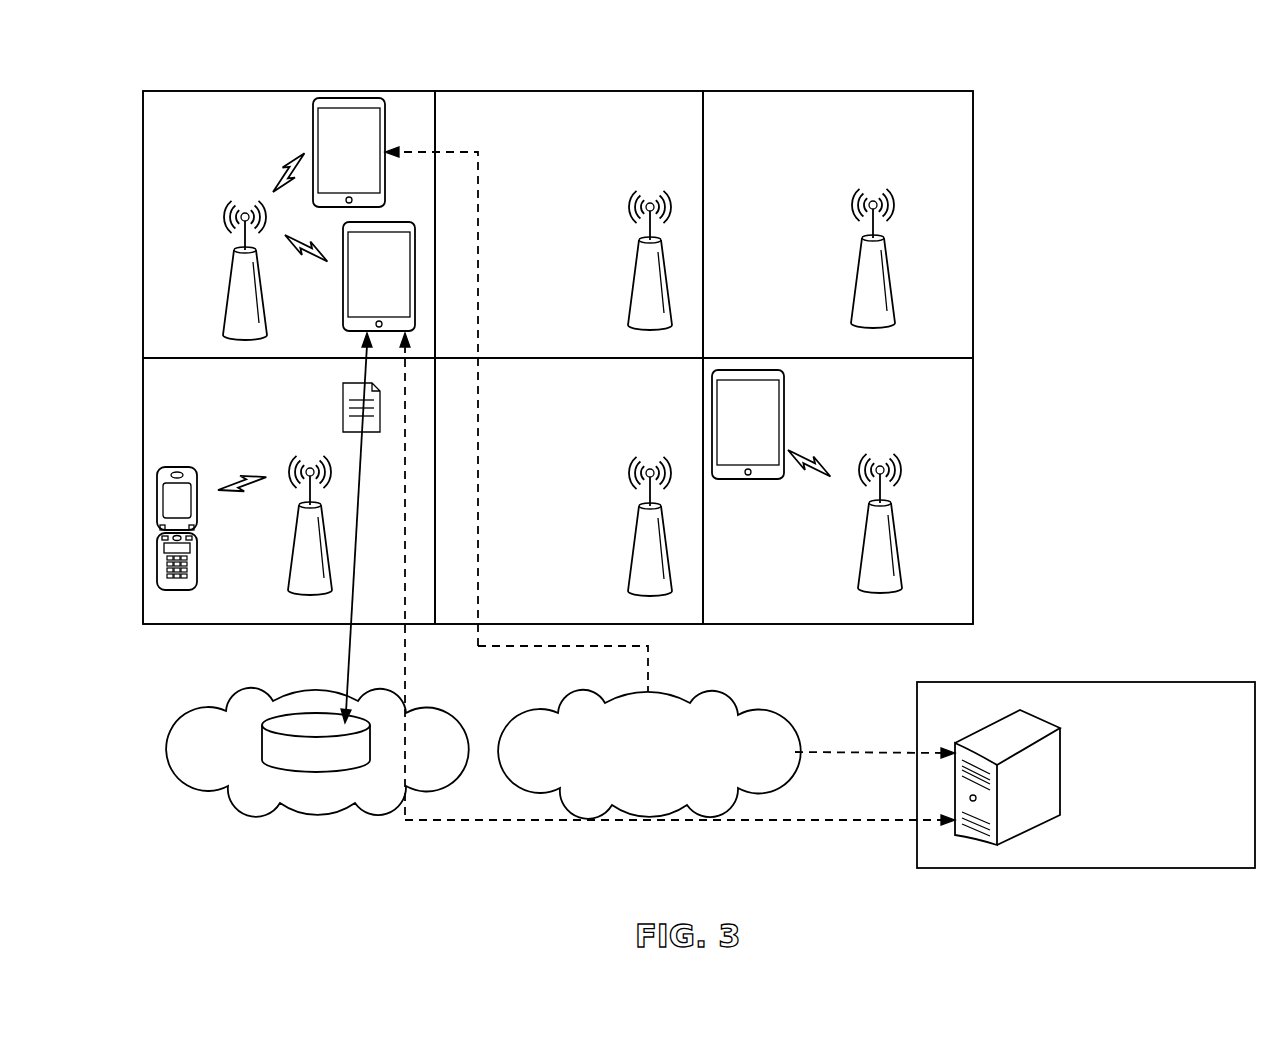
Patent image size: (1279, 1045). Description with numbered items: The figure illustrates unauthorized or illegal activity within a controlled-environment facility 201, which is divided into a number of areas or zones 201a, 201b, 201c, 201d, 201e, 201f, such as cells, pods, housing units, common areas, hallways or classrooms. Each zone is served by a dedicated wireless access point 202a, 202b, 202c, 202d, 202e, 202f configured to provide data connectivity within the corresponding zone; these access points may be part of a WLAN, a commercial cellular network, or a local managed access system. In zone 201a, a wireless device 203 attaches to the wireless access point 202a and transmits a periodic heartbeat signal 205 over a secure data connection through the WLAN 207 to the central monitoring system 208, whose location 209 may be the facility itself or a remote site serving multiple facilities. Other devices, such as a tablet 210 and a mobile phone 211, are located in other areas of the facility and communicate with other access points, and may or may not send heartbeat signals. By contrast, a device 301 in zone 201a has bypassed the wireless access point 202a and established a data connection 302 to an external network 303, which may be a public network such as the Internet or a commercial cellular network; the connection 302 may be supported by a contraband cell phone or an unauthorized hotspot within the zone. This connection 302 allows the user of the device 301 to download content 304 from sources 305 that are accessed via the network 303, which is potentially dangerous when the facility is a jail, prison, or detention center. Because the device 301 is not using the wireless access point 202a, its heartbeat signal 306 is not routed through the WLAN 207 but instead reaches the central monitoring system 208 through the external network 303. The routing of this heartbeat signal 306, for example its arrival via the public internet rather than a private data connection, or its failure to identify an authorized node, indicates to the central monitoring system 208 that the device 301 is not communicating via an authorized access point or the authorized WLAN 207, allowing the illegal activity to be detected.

The controlled-environment facility 201 is at (174, 66).
The zone 201a is at (226, 124).
The zone 201b is at (516, 123).
The zone 201c is at (782, 123).
The zone 201d is at (226, 400).
The zone 201e is at (677, 403).
The zone 201f is at (953, 403).
The wireless access point 202a is at (229, 281).
The wireless access point 202b is at (632, 276).
The wireless access point 202c is at (855, 276).
The wireless access point 202d is at (294, 542).
The wireless access point 202e is at (632, 541).
The wireless access point 202f is at (862, 546).
The wireless device 203 is at (313, 143).
The heartbeat signal 205 is at (876, 749).
The WLAN 207 is at (580, 699).
The central monitoring system 208 is at (1060, 735).
The location of central monitoring system 209 is at (1048, 682).
The tablet 210 is at (787, 418).
The mobile phone 211 is at (178, 466).
The device 301 is at (343, 304).
The data connection 302 is at (345, 673).
The external network 303 is at (242, 699).
The content 304 is at (343, 403).
The sources 305 is at (371, 761).
The heartbeat signal 306 is at (658, 823).